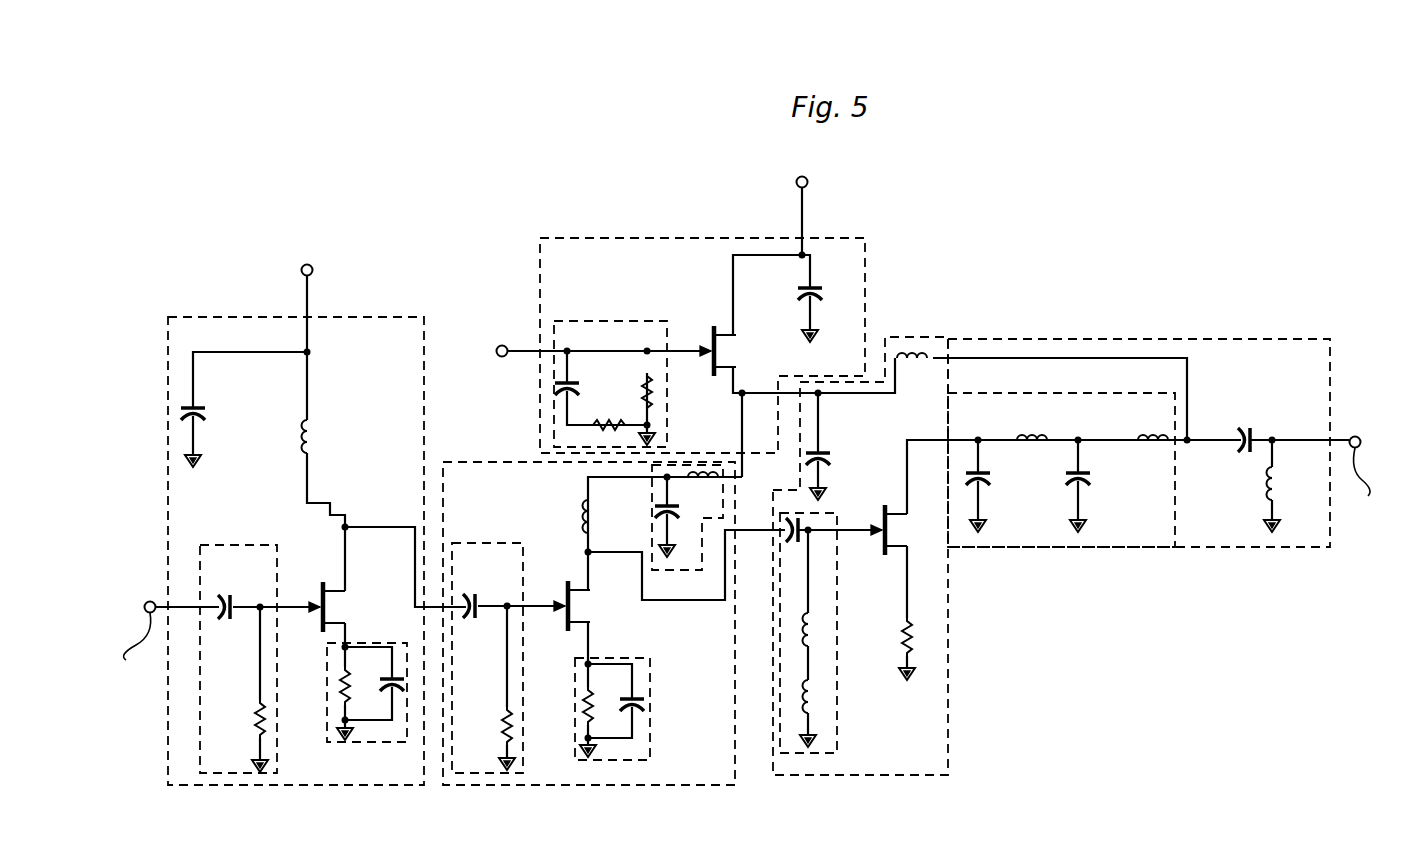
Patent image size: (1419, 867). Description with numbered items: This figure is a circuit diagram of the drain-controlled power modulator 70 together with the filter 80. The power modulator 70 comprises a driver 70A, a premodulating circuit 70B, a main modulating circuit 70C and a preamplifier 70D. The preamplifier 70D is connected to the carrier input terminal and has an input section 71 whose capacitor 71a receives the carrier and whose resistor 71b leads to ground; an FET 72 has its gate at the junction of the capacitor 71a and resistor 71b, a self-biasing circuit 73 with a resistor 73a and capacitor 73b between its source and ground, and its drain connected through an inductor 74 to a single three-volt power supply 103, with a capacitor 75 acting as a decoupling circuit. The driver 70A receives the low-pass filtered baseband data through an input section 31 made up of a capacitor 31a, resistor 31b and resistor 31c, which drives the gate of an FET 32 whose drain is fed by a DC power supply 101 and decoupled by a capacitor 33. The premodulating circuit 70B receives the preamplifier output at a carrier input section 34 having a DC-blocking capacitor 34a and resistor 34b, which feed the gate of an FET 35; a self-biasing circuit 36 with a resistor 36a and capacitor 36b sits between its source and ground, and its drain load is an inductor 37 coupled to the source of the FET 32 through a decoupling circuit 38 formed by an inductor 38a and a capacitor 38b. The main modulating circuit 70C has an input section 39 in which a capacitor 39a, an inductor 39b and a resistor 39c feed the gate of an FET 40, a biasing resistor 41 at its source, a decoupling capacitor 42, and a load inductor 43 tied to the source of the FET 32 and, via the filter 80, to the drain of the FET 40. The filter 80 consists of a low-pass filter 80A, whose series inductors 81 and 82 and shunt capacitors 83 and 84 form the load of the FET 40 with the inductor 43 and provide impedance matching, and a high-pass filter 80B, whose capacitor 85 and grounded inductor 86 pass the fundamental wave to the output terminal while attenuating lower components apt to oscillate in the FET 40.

The drain-controlled power modulator 70 is at (470, 266).
The driver 70A is at (683, 238).
The premodulating circuit 70B is at (630, 787).
The main modulating circuit 70C is at (907, 777).
The preamplifier 70D is at (198, 317).
The input section 71 is at (245, 545).
The capacitor 71a is at (230, 618).
The resistor 71b is at (258, 718).
The FET 72 is at (325, 581).
The self-biasing circuit 73 is at (375, 643).
The resistor 73a is at (342, 685).
The capacitor 73b is at (389, 685).
The inductor 74 is at (313, 437).
The capacitor 75 is at (202, 412).
The power supply 103 is at (313, 270).
The DC power supply 101 is at (808, 182).
The input section 31 is at (612, 321).
The capacitor 31a is at (556, 388).
The resistor 31b is at (601, 423).
The resistor 31c is at (655, 388).
The FET 32 is at (737, 351).
The capacitor 33 is at (798, 293).
The carrier input section 34 is at (470, 543).
The capacitor 34a is at (477, 618).
The resistor 34b is at (502, 726).
The FET 35 is at (591, 605).
The self-biasing circuit 36 is at (655, 670).
The resistor 36a is at (583, 709).
The capacitor 36b is at (648, 705).
The inductor 37 is at (582, 518).
The decoupling circuit 38 is at (693, 585).
The inductor 38a is at (720, 484).
The capacitor 38b is at (657, 514).
The input section 39 is at (838, 593).
The capacitor 39a is at (815, 522).
The inductor 39b is at (815, 633).
The resistor 39c is at (815, 699).
The FET 40 is at (890, 530).
The resistor 41 is at (900, 640).
The capacitor 42 is at (835, 460).
The inductor 43 is at (918, 372).
The filter 80 is at (1280, 339).
The low-pass filter 80A is at (1060, 549).
The high-pass filter 80B is at (1250, 549).
The inductor 81 is at (1034, 440).
The inductor 82 is at (1153, 441).
The capacitor 83 is at (992, 477).
The capacitor 84 is at (1092, 477).
The capacitor 85 is at (1240, 455).
The inductor 86 is at (1279, 483).